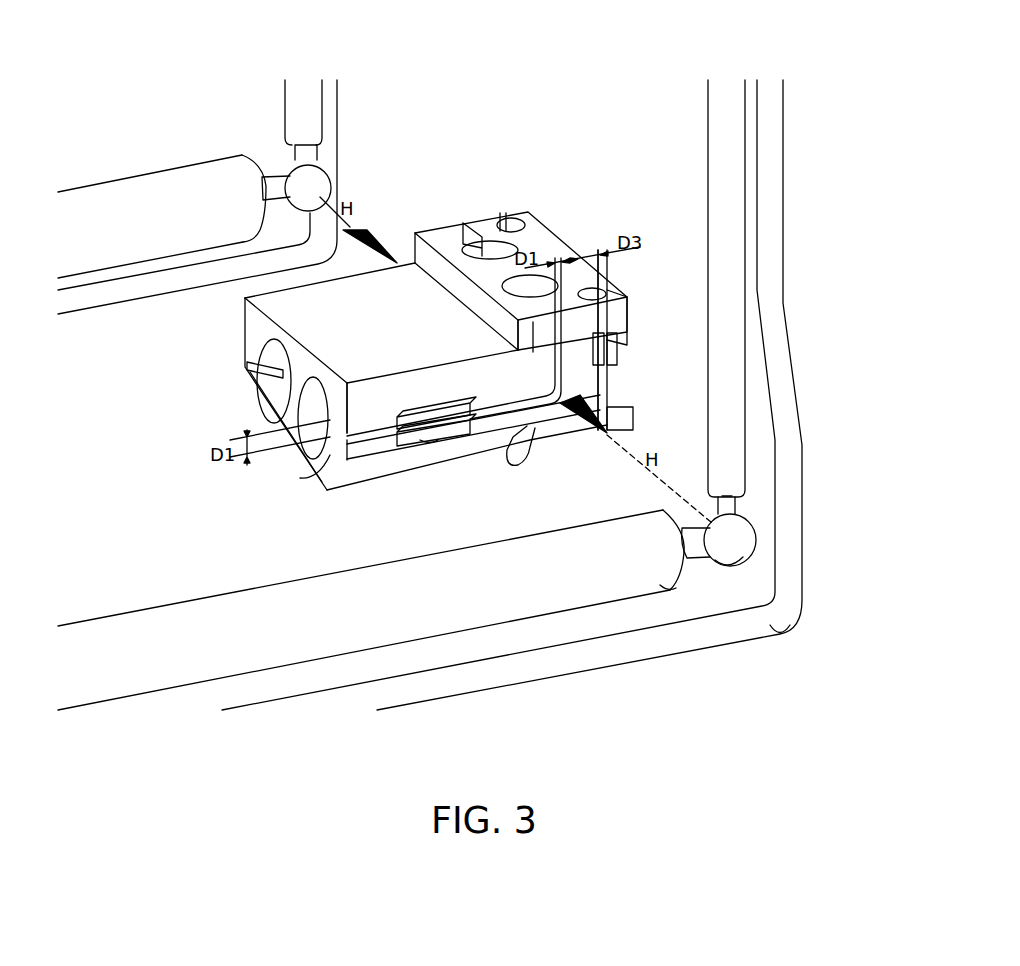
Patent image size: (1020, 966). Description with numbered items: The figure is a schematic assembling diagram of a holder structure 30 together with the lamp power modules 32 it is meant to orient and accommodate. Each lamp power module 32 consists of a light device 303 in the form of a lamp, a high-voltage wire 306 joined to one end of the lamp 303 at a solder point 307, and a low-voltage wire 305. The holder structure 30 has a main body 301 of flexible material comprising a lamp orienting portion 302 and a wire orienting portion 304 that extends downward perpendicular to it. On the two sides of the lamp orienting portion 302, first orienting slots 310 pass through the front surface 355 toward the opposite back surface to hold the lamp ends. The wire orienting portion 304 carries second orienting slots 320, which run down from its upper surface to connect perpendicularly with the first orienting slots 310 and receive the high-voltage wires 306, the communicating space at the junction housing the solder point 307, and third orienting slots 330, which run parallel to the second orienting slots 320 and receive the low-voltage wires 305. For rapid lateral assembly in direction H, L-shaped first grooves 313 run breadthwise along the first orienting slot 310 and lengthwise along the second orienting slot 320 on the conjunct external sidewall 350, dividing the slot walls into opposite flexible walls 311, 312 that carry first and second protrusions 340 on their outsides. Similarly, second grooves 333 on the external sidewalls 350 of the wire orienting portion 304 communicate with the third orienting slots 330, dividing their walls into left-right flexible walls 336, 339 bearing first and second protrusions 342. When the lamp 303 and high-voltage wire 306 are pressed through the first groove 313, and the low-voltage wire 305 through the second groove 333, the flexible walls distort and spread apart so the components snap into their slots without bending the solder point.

The holder structure 30 is at (424, 150).
The lamp power module 32 is at (150, 182).
The main body 301 is at (442, 462).
The lamp orienting portion 302 is at (403, 272).
The light device 303 is at (672, 582).
The wire orienting portion 304 is at (440, 242).
The low-voltage wire 305 is at (770, 628).
The high-voltage wire 306 is at (735, 494).
The solder point 307 is at (738, 542).
The first orienting slot 310 is at (305, 418).
The flexible wall 311 is at (345, 385).
The flexible wall 312 is at (302, 478).
The first groove 313 is at (248, 368).
The second orienting slot 320 is at (462, 250).
The third orienting slot 330 is at (580, 292).
The second groove 333 is at (507, 218).
The flexible wall 336 is at (630, 317).
The flexible wall 339 is at (627, 300).
The first and second protrusions 340 is at (427, 432).
The first and second protrusions 342 is at (614, 352).
The external sidewall 350 is at (244, 332).
The front surface 355 is at (290, 448).